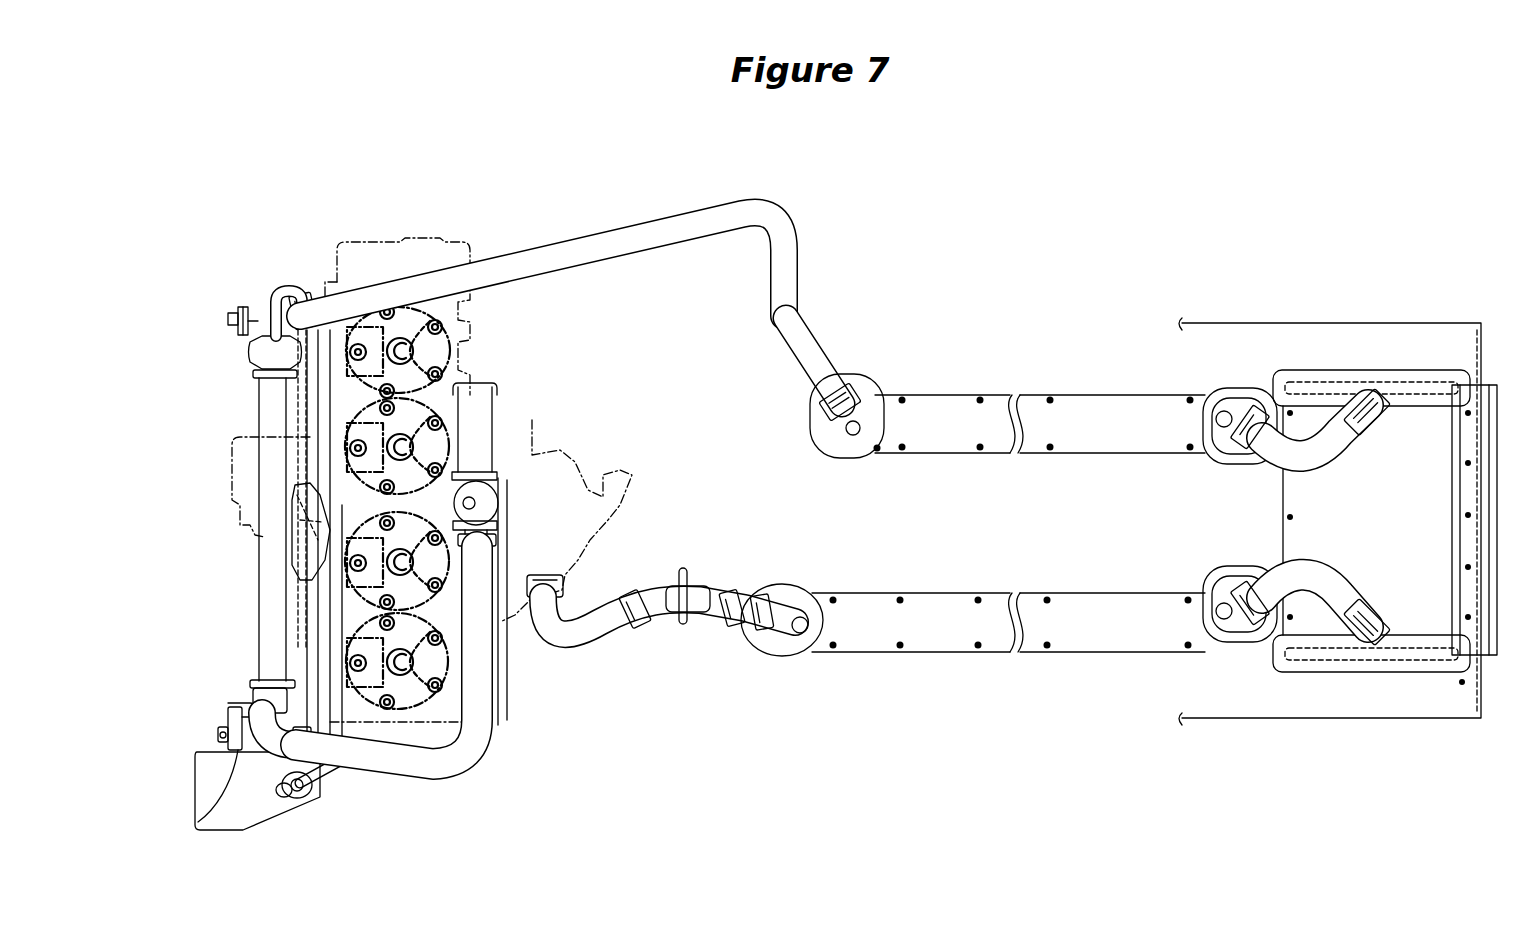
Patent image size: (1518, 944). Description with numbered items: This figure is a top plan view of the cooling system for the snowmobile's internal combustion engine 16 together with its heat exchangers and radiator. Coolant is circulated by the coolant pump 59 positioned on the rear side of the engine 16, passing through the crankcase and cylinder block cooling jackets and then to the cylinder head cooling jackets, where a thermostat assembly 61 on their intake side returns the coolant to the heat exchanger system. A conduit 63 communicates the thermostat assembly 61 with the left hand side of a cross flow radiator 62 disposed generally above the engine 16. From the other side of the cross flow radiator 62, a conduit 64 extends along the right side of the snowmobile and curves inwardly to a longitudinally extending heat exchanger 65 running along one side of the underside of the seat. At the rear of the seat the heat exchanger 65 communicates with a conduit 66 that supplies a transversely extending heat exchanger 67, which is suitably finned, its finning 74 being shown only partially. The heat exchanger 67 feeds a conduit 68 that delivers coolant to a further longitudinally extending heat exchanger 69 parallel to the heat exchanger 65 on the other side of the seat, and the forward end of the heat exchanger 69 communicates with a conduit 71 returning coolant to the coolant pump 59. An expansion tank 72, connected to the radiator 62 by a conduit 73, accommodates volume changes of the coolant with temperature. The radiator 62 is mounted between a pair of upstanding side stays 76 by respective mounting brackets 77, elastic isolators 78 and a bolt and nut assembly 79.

The internal combustion engine 16 is at (470, 352).
The coolant pump 59 is at (606, 492).
The thermostat assembly 61 is at (530, 470).
The cross flow radiator 62 is at (262, 607).
The conduit 63 is at (487, 683).
The conduit 64 is at (607, 238).
The longitudinally extending heat exchanger 65 is at (933, 402).
The conduit 66 is at (1337, 445).
The transversely extending heat exchanger 67 is at (1295, 488).
The conduit 68 is at (1320, 577).
The longitudinally extending heat exchanger 69 is at (1123, 640).
The conduit 71 is at (583, 627).
The expansion tank 72 is at (240, 833).
The conduit 73 is at (306, 298).
The finning 74 is at (328, 435).
The side stays 76 is at (268, 300).
The mounting brackets 77 is at (252, 352).
The elastic isolators 78 is at (243, 307).
The bolt and nut assembly 79 is at (258, 338).